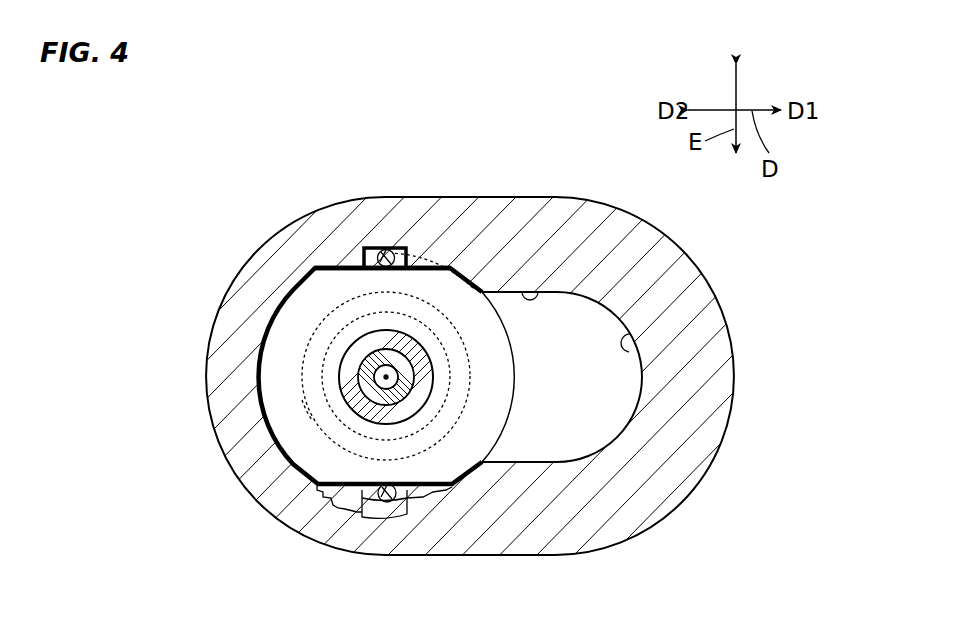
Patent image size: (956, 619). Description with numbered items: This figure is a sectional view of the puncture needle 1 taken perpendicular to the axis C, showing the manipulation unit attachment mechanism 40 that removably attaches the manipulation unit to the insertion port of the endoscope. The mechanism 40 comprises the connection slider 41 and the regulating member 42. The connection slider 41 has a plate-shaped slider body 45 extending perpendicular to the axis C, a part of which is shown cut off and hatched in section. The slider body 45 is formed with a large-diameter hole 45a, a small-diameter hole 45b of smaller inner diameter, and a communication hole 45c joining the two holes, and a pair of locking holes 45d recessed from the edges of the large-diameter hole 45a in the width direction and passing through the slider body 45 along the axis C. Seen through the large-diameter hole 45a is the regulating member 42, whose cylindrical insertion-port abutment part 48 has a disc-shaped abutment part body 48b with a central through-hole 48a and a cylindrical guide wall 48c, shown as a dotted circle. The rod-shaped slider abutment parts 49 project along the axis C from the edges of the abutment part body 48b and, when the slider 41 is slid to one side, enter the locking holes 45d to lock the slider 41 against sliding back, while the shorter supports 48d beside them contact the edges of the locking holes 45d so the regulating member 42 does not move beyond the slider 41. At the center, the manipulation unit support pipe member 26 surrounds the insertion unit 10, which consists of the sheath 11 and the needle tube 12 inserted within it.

The puncture needle 1 is at (166, 171).
The manipulation unit attachment mechanism 40 is at (264, 195).
The connection slider 41 is at (498, 197).
The regulating member 42 is at (284, 289).
The slider body 45 is at (478, 324).
The large-diameter hole 45a is at (443, 270).
The small-diameter hole 45b is at (630, 353).
The communication hole 45c is at (530, 290).
The locking hole 45d is at (364, 250).
The insertion-port abutment part 48 is at (296, 315).
The through-hole 48a is at (348, 390).
The abutment part body 48b is at (290, 340).
The guide wall 48c is at (302, 352).
The support 48d is at (372, 270).
The slider abutment part 49 is at (386, 249).
The insertion unit 10 is at (469, 369).
The sheath 11 is at (399, 370).
The needle tube 12 is at (400, 373).
The manipulation unit support pipe member 26 is at (420, 402).
The axis C is at (375, 400).